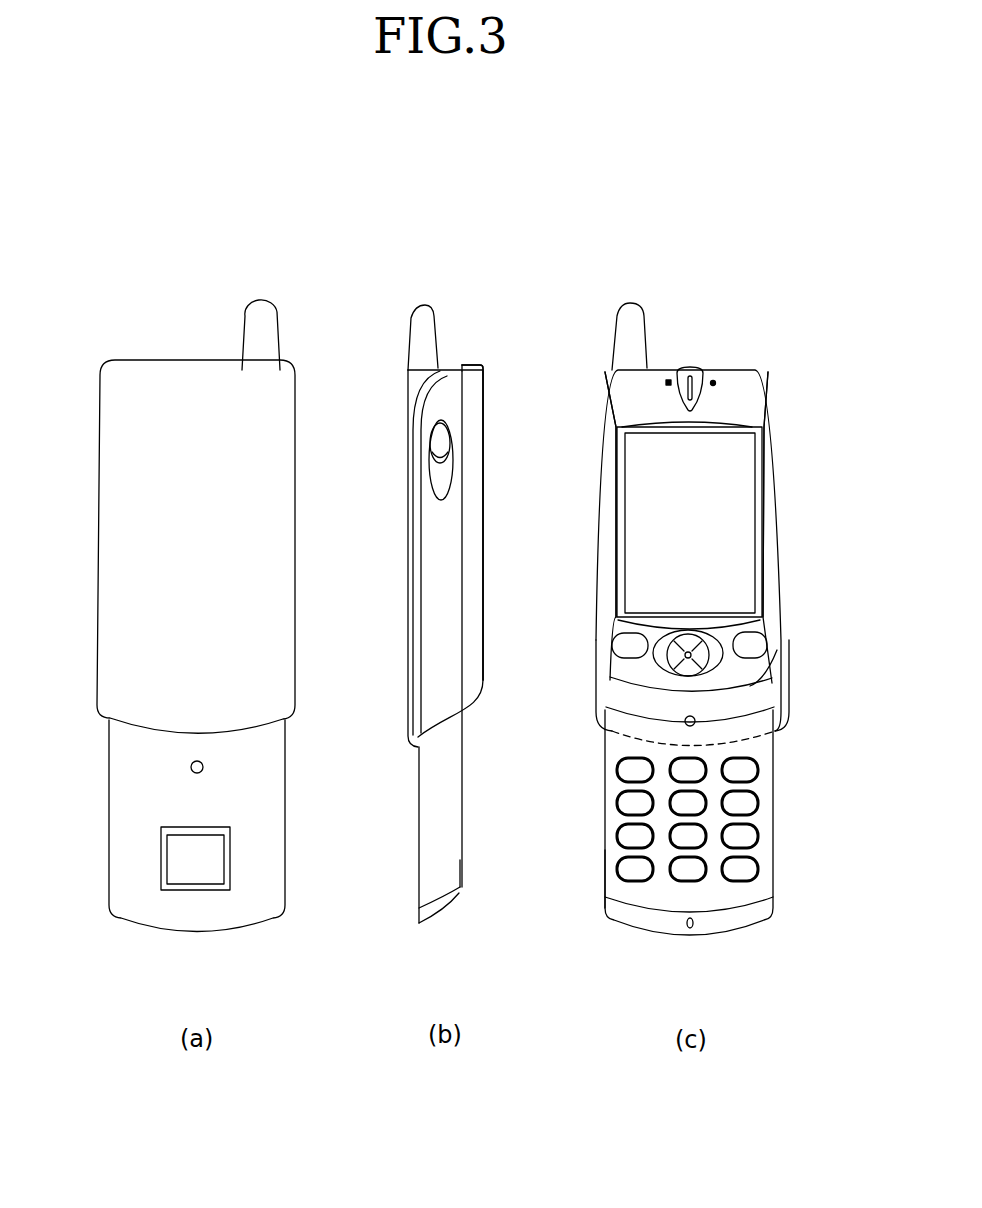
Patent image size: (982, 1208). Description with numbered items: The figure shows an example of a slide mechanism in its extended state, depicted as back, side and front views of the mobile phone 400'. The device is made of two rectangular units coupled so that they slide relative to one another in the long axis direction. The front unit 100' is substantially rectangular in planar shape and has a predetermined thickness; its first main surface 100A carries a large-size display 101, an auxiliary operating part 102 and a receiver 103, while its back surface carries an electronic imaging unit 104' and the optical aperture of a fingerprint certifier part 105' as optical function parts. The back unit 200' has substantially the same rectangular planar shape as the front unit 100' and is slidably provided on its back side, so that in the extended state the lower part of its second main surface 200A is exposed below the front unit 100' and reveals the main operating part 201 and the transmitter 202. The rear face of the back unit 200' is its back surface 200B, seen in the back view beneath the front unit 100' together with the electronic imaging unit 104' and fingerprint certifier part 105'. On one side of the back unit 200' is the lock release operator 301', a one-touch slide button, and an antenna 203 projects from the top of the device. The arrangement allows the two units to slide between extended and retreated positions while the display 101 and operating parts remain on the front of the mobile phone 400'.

The front unit 100' is at (452, 585).
The first main surface 100A is at (488, 380).
The display 101 is at (748, 473).
The auxiliary operating part 102 is at (728, 685).
The receiver 103 is at (692, 380).
The electronic imaging unit 104' is at (126, 777).
The fingerprint certifier part 105' is at (140, 861).
The back unit 200' is at (616, 854).
The second main surface 200A is at (460, 871).
The back surface of back unit 200B is at (258, 899).
The main operating part 201 is at (618, 770).
The transmitter 202 is at (688, 930).
The antenna 203 is at (411, 318).
The lock release operator 301' is at (405, 468).
The mobile phone 400' is at (515, 450).